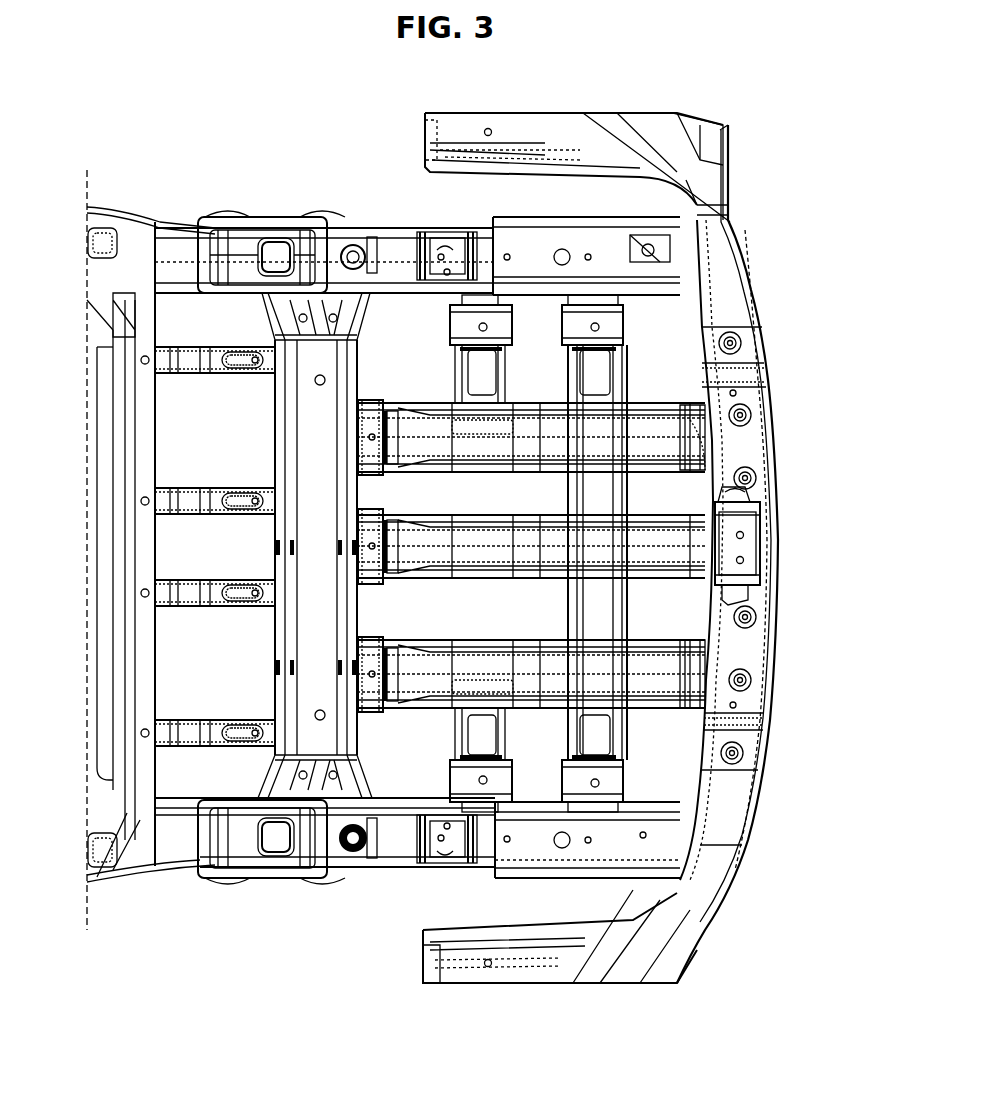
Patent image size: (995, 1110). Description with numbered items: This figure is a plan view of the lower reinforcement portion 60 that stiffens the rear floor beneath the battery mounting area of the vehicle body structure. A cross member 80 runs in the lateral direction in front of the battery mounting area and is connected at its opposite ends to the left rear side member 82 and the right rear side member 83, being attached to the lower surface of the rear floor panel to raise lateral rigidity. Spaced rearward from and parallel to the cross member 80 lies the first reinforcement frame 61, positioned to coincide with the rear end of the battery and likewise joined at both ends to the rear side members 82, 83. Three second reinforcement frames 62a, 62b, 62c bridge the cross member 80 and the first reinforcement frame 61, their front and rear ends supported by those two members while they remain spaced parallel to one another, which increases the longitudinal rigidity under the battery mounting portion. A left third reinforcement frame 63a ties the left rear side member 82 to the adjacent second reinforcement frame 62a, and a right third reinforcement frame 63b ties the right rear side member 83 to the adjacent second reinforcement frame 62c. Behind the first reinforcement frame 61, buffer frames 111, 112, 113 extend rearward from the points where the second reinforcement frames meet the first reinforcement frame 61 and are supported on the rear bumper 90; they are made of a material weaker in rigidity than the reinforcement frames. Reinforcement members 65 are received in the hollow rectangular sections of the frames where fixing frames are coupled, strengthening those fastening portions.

The lower reinforcement portion 60 is at (642, 394).
The first reinforcement frame 61 is at (722, 492).
The second reinforcement frame 62a is at (428, 680).
The second reinforcement frame 62b is at (428, 553).
The second reinforcement frame 62c is at (428, 440).
The left third reinforcement frame 63a is at (448, 750).
The right third reinforcement frame 63b is at (455, 360).
The reinforcement member 65 is at (608, 330).
The cross member 80 is at (305, 633).
The left rear side member 82 is at (533, 835).
The right rear side member 83 is at (535, 250).
The rear bumper 90 is at (747, 647).
The buffer frame 111 is at (677, 673).
The buffer frame 112 is at (685, 548).
The buffer frame 113 is at (683, 437).